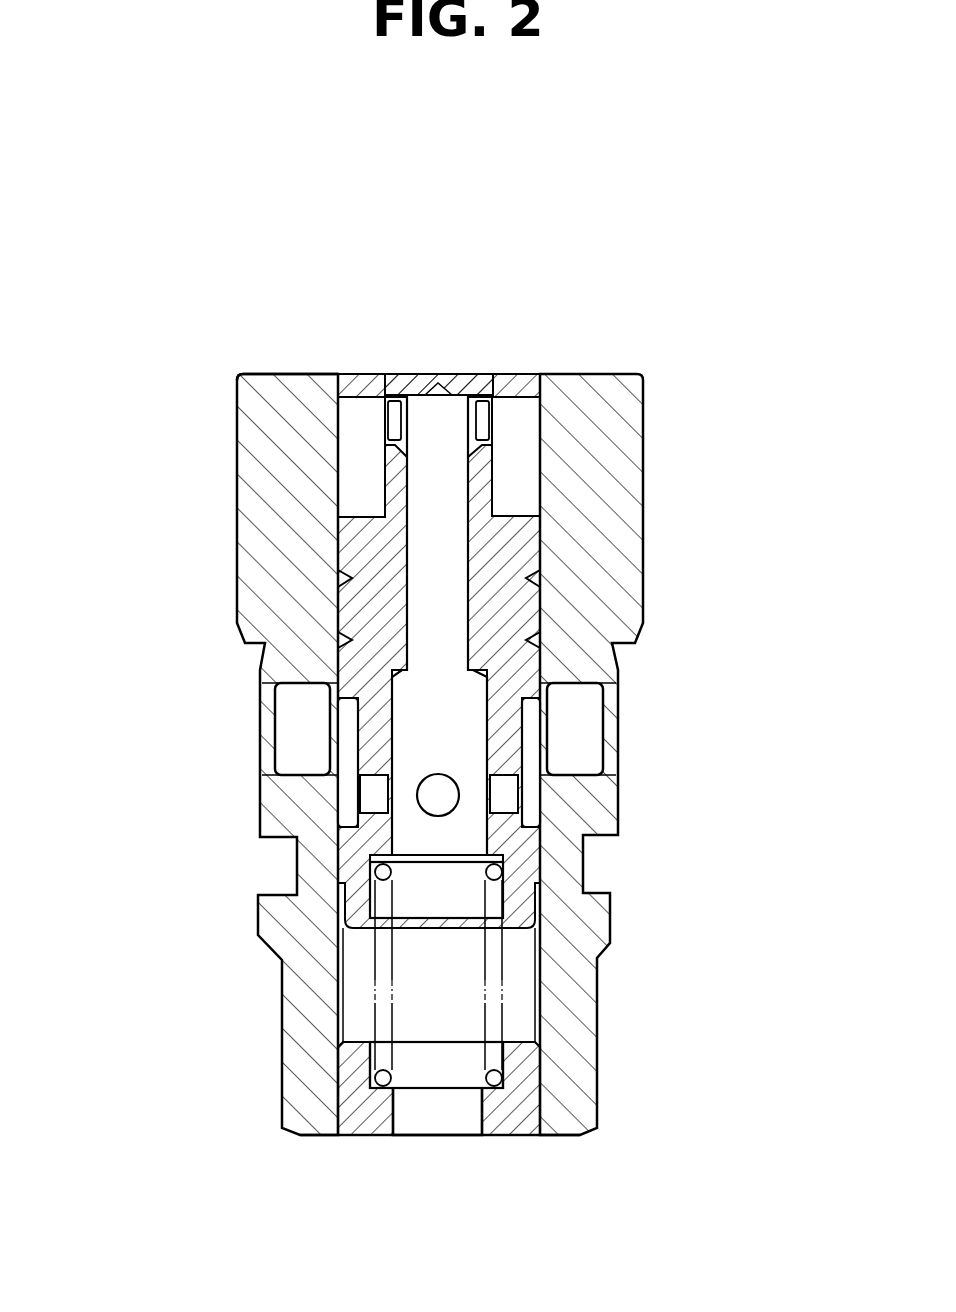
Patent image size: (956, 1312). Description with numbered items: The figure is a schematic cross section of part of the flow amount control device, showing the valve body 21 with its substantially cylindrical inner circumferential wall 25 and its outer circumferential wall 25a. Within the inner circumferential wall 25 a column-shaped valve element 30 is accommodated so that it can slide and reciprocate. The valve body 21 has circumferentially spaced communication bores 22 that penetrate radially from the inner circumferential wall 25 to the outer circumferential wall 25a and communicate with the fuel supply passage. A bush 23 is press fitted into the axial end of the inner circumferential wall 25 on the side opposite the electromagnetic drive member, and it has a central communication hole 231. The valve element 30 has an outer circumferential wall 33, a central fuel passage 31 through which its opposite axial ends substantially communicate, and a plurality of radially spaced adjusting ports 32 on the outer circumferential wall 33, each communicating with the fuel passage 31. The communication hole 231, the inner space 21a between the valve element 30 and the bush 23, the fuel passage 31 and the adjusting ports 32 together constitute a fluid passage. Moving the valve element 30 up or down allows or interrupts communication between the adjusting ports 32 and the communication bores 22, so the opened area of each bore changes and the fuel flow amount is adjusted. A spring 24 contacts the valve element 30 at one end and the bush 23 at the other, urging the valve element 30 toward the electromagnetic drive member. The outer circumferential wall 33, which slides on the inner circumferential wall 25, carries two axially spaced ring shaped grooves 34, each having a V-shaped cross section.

The valve body 21 is at (590, 372).
The inner space 21a is at (440, 1018).
The communication bores 22 is at (297, 727).
The bush 23 is at (355, 1040).
The communication hole 231 is at (410, 1117).
The spring 24 is at (500, 963).
The inner circumferential wall 25 is at (352, 390).
The outer circumferential wall 25a is at (237, 420).
The valve element 30 is at (572, 591).
The fuel passage 31 is at (425, 481).
The adjusting ports 32 is at (430, 795).
The outer circumferential wall 33 is at (543, 385).
The ring shaped grooves 34 is at (350, 578).